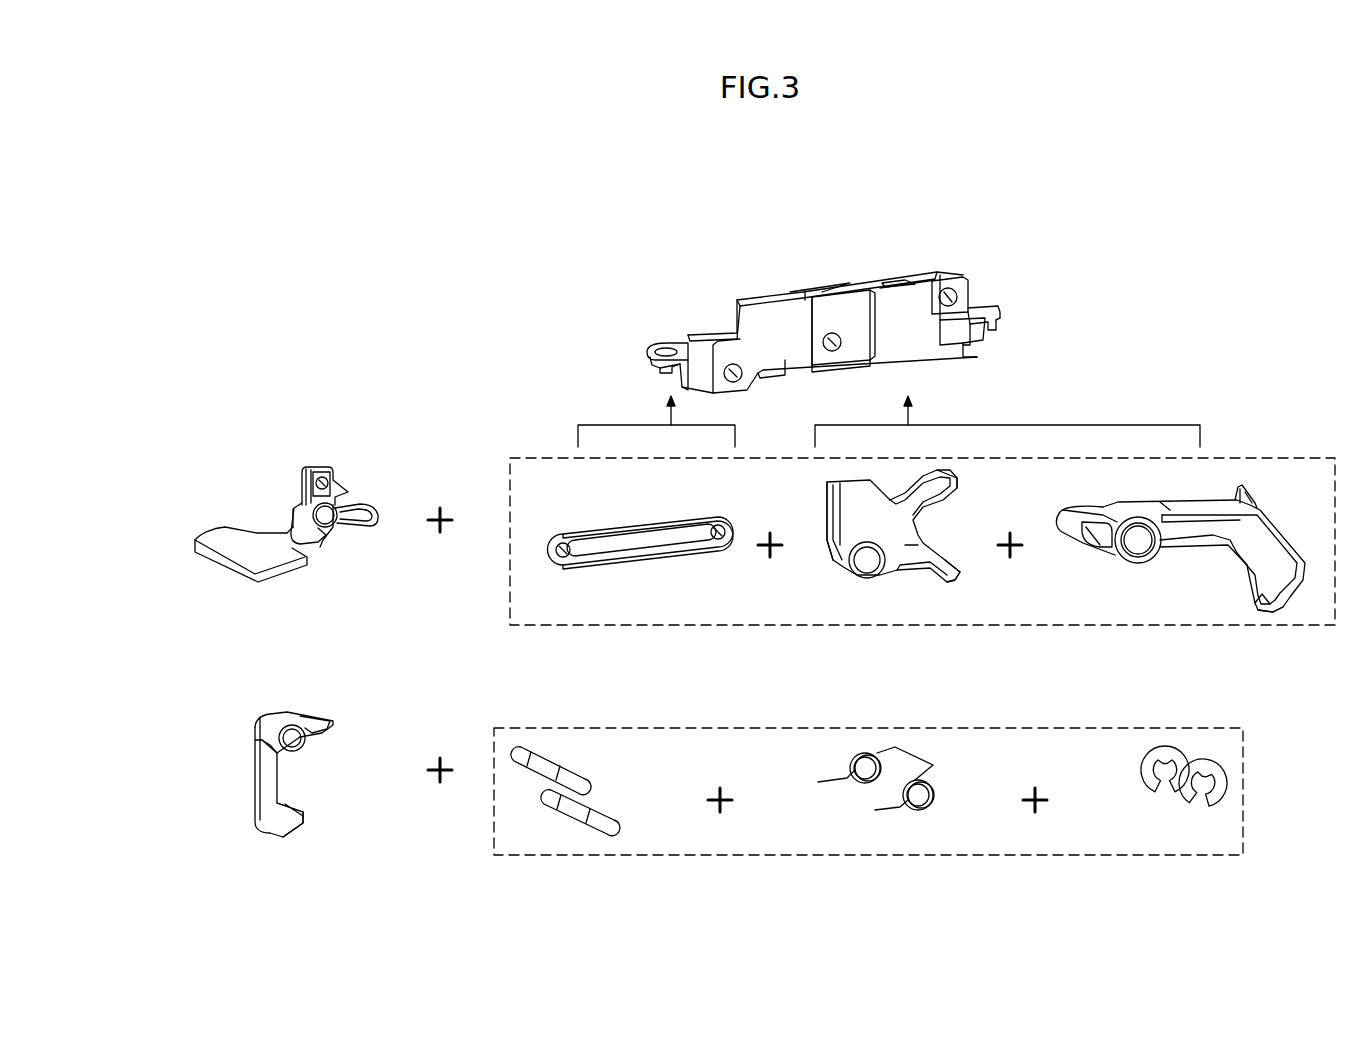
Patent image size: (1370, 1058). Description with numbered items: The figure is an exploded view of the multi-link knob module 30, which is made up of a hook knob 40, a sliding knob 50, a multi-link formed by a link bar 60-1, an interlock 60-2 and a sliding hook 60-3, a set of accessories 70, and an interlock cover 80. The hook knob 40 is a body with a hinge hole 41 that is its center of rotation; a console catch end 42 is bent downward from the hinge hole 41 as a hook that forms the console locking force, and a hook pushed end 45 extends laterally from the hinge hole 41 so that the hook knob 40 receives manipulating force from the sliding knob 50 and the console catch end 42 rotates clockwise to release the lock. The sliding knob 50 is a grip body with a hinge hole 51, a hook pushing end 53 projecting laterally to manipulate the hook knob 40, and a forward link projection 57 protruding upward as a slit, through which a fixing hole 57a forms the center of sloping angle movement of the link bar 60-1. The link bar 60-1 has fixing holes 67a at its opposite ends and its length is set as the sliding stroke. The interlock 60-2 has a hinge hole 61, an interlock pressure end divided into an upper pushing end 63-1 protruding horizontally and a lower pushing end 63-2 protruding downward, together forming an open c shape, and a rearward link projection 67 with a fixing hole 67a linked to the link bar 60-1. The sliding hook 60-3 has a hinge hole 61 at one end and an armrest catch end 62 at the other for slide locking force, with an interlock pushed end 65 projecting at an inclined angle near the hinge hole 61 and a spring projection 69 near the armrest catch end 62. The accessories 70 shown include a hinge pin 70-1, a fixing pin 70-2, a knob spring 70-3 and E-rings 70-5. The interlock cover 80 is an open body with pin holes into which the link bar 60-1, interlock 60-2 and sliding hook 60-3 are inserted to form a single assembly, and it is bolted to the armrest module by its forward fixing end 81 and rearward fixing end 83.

The multi-link knob module 30 is at (482, 360).
The hook knob 40 is at (261, 787).
The hinge hole 41 is at (294, 740).
The console catch end 42 is at (292, 826).
The hook pushed end 45 is at (312, 717).
The sliding knob 50 is at (300, 515).
The hinge hole 51 is at (325, 522).
The hook pushing end 53 is at (367, 527).
The forward link projection 57 is at (303, 476).
The fixing hole 57a is at (318, 478).
The link bar 60-1 is at (645, 540).
The interlock 60-2 is at (910, 552).
The sliding hook 60-3 is at (1195, 527).
The hinge hole 61 is at (865, 565).
The armrest catch end 62 is at (1285, 605).
The upper pushing end 63-1 is at (948, 490).
The lower pushing end 63-2 is at (955, 570).
The interlock pushed end 65 is at (1093, 535).
The rearward link projection 67 is at (835, 521).
The fixing hole 67a is at (565, 550).
The spring projection 69 is at (1248, 500).
The accessories 70 is at (1245, 826).
The hinge pin 70-1 is at (610, 827).
The fixing pin 70-2 is at (587, 783).
The knob spring 70-3 is at (930, 768).
The E-rings 70-5 is at (1225, 778).
The interlock cover 80 is at (784, 330).
The forward fixing end 81 is at (668, 346).
The rearward fixing end 83 is at (983, 317).